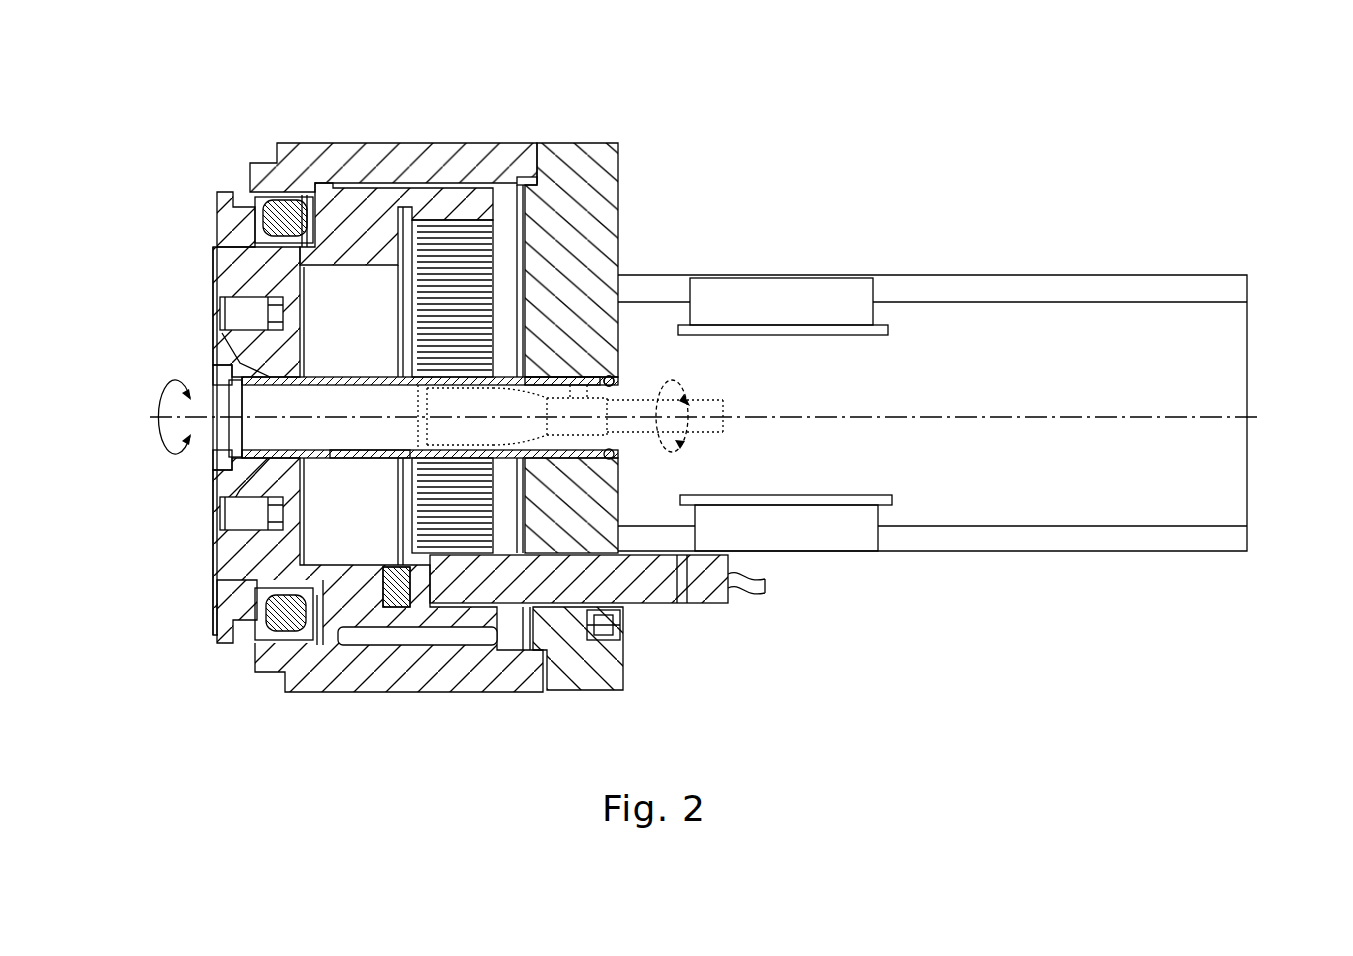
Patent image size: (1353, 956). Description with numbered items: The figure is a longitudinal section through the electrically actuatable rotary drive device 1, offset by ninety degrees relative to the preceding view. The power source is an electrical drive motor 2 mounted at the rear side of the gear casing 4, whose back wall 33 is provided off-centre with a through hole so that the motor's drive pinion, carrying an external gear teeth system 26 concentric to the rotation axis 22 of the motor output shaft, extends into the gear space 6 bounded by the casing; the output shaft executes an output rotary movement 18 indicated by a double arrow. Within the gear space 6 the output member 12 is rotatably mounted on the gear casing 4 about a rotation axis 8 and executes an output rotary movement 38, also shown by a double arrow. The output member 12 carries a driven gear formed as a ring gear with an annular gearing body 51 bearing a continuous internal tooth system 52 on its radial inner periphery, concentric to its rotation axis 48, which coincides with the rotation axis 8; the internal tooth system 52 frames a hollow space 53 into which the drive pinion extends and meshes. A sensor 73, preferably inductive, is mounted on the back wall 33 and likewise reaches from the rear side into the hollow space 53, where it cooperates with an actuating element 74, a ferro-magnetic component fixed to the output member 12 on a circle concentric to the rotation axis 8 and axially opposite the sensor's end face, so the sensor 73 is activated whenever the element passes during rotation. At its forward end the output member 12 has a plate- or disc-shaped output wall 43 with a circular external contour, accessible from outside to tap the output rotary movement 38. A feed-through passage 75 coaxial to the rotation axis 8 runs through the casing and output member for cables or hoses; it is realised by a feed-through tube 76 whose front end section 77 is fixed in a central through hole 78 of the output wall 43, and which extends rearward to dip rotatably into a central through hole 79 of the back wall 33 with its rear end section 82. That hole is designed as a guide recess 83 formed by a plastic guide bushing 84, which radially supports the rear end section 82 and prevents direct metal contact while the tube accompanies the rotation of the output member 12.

The rotary drive device 1 is at (908, 141).
The electrical drive motor 2 is at (1084, 282).
The gear casing 4 is at (479, 142).
The gear space 6 is at (506, 226).
The rotation axis 8 is at (310, 385).
The rotation axis 48 is at (430, 454).
The output member 12 is at (219, 568).
The output rotary movement 18 is at (693, 401).
The rotation axis 22 is at (813, 420).
The external gear teeth system 26 is at (428, 391).
The back wall 33 is at (612, 192).
The output rotary movement 38 is at (170, 453).
The output wall 43 is at (221, 266).
The annular gearing body 51 is at (442, 194).
The internal tooth system 52 is at (432, 248).
The hollow space 53 is at (482, 517).
The sensor 73 is at (640, 590).
The actuating element 74 is at (393, 593).
The feed-through passage 75 is at (327, 440).
The feed-through tube 76 is at (370, 458).
The front end section 77 is at (257, 367).
The central through hole 78 is at (225, 437).
The central through hole 79 is at (620, 383).
The guide recess 83 is at (609, 381).
The rear end section 82 is at (604, 464).
The guide bushing 84 is at (565, 377).